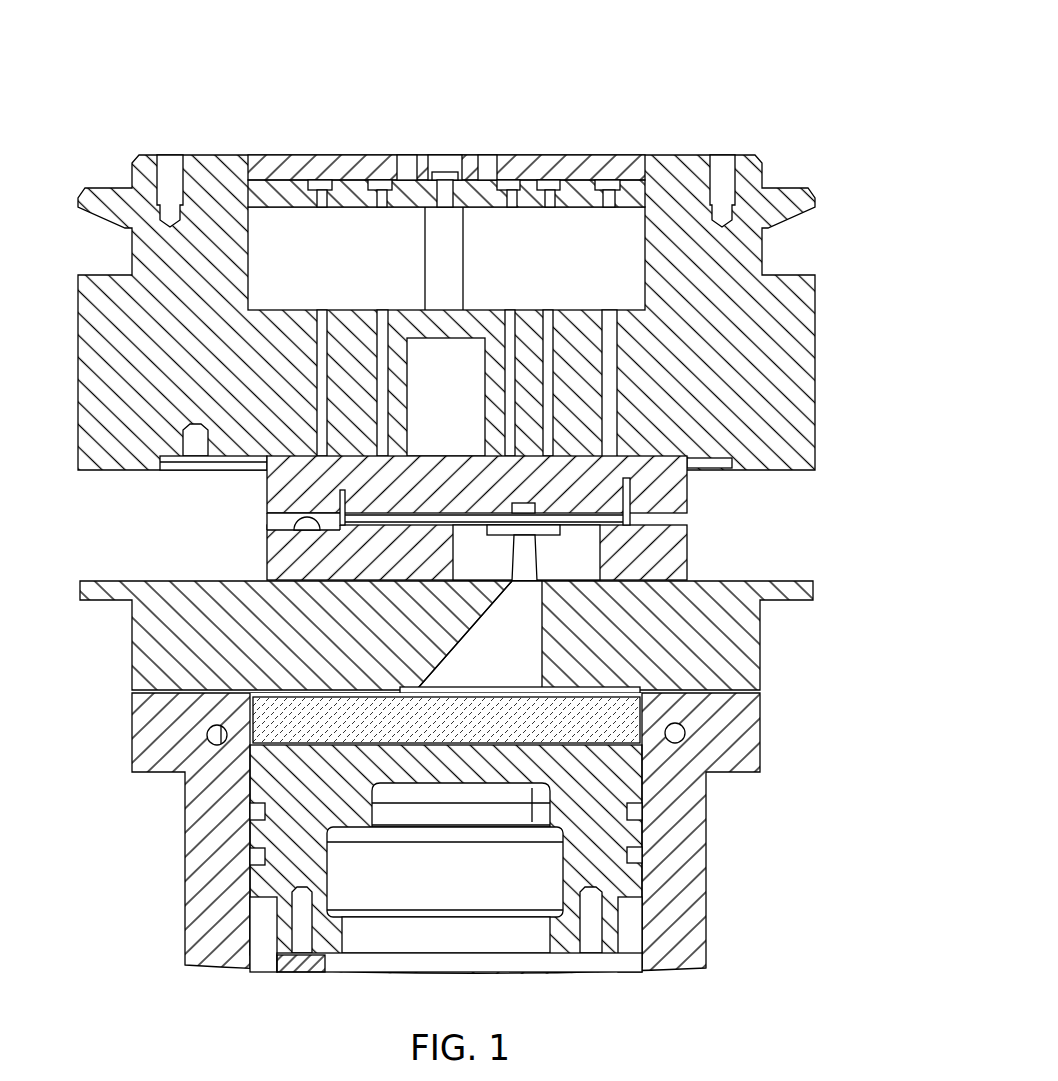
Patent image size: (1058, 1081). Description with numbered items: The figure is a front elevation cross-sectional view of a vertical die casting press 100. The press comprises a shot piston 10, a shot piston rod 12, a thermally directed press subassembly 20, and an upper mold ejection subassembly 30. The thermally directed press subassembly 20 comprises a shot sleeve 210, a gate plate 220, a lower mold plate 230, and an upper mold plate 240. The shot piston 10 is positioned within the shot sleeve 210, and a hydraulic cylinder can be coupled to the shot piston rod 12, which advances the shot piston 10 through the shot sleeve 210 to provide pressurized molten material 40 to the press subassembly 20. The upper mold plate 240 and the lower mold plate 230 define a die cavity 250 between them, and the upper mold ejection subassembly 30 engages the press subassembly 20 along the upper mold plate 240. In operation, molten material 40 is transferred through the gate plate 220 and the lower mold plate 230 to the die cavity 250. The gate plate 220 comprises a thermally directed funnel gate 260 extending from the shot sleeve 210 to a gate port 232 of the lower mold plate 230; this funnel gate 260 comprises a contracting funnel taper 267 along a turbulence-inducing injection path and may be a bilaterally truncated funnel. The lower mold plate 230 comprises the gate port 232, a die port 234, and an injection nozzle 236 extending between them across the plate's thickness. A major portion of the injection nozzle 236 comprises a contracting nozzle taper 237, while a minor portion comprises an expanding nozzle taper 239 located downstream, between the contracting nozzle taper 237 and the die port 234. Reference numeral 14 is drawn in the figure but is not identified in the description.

The die casting press 100 is at (738, 74).
The upper mold ejection subassembly 30 is at (70, 152).
The thermally directed press subassembly 20 is at (65, 480).
The upper mold plate 240 is at (287, 467).
The die cavity 250 is at (632, 507).
The lower mold plate 230 is at (287, 553).
The die port 234 is at (632, 520).
The expanding nozzle taper 239 is at (508, 530).
The contracting nozzle taper 237 is at (540, 552).
The injection nozzle 236 is at (517, 556).
The gate port 232 is at (538, 574).
The gate plate 220 is at (747, 594).
The contracting funnel taper 267 is at (465, 628).
The thermally directed funnel gate 260 is at (533, 628).
The molten material 40 is at (620, 722).
The shot sleeve 210 is at (752, 743).
The shot piston 10 is at (627, 828).
The cavity 14 is at (453, 882).
The shot piston rod 12 is at (282, 968).